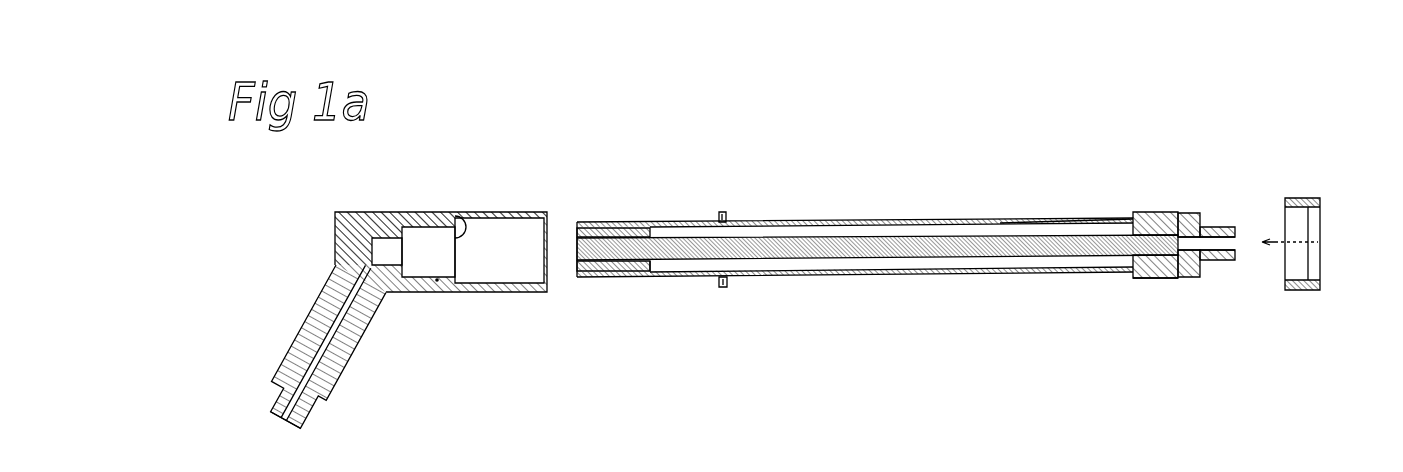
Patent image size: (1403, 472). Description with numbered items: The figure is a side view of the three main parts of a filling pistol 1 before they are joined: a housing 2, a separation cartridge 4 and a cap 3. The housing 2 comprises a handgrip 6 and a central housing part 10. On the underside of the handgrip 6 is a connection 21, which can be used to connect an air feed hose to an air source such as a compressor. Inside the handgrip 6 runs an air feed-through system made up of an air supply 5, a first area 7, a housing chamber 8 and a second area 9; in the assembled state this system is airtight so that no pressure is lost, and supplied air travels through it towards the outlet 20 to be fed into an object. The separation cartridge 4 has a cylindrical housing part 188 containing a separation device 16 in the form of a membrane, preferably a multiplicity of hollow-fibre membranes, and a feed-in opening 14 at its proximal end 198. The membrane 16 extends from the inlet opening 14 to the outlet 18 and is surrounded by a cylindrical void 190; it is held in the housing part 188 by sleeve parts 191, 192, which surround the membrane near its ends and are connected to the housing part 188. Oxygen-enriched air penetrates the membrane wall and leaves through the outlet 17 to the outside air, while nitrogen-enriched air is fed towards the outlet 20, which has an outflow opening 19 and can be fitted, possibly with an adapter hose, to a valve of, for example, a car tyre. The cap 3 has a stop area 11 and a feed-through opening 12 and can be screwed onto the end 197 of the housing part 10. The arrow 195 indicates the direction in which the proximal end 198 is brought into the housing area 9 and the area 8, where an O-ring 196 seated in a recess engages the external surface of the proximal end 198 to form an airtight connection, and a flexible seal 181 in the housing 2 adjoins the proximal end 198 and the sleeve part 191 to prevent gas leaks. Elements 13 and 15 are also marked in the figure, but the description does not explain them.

The filling pistol 1 is at (788, 303).
The housing 2 is at (317, 281).
The cap 3 is at (1325, 200).
The separation cartridge 4 is at (925, 208).
The air supply 5 is at (290, 360).
The handgrip 6 is at (332, 370).
The first area 7 is at (380, 233).
The housing chamber 8 is at (418, 262).
The second area 9 is at (510, 263).
The central housing part 10 is at (442, 181).
The stop area 11 is at (1296, 290).
The feed-through opening 12 is at (1318, 236).
The cap top rim 13 is at (1313, 197).
The feed-in opening 14 is at (575, 245).
The pins 15 is at (724, 212).
The separation device 16 is at (847, 247).
The outlet 17 is at (664, 222).
The outlet 18 is at (1170, 212).
The outflow opening 19 is at (1215, 270).
The outlet 20 is at (1222, 228).
The connection 21 is at (295, 413).
The seal 181 is at (400, 198).
The housing part 188 is at (1053, 219).
The cylindrical void 190 is at (893, 262).
The sleeve part 191 is at (628, 278).
The sleeve part 192 is at (1150, 280).
The arrow 195 is at (578, 240).
The O-ring 196 is at (463, 222).
The end 197 is at (545, 212).
The proximal end 198 is at (600, 277).